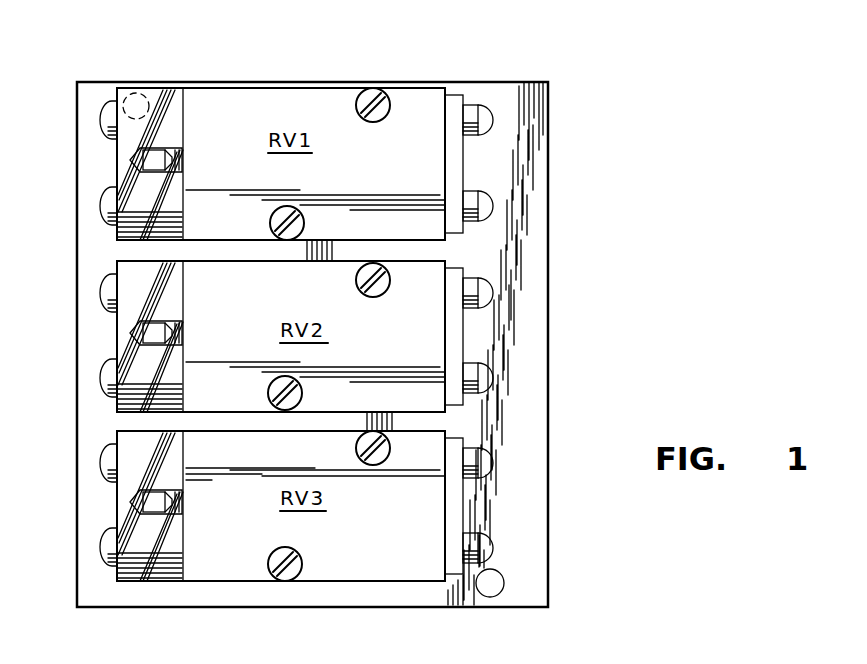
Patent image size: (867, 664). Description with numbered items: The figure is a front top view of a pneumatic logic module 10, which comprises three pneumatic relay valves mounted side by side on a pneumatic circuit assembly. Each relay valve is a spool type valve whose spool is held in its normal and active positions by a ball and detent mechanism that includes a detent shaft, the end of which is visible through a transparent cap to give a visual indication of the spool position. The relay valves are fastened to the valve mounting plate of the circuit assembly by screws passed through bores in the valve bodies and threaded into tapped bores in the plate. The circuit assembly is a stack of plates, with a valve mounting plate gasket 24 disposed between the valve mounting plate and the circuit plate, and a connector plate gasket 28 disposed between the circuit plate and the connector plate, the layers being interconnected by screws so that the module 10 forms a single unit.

The pneumatic logic module 10 is at (558, 220).
The valve mounting plate gasket 24 is at (641, 658).
The connector plate gasket 28 is at (733, 661).